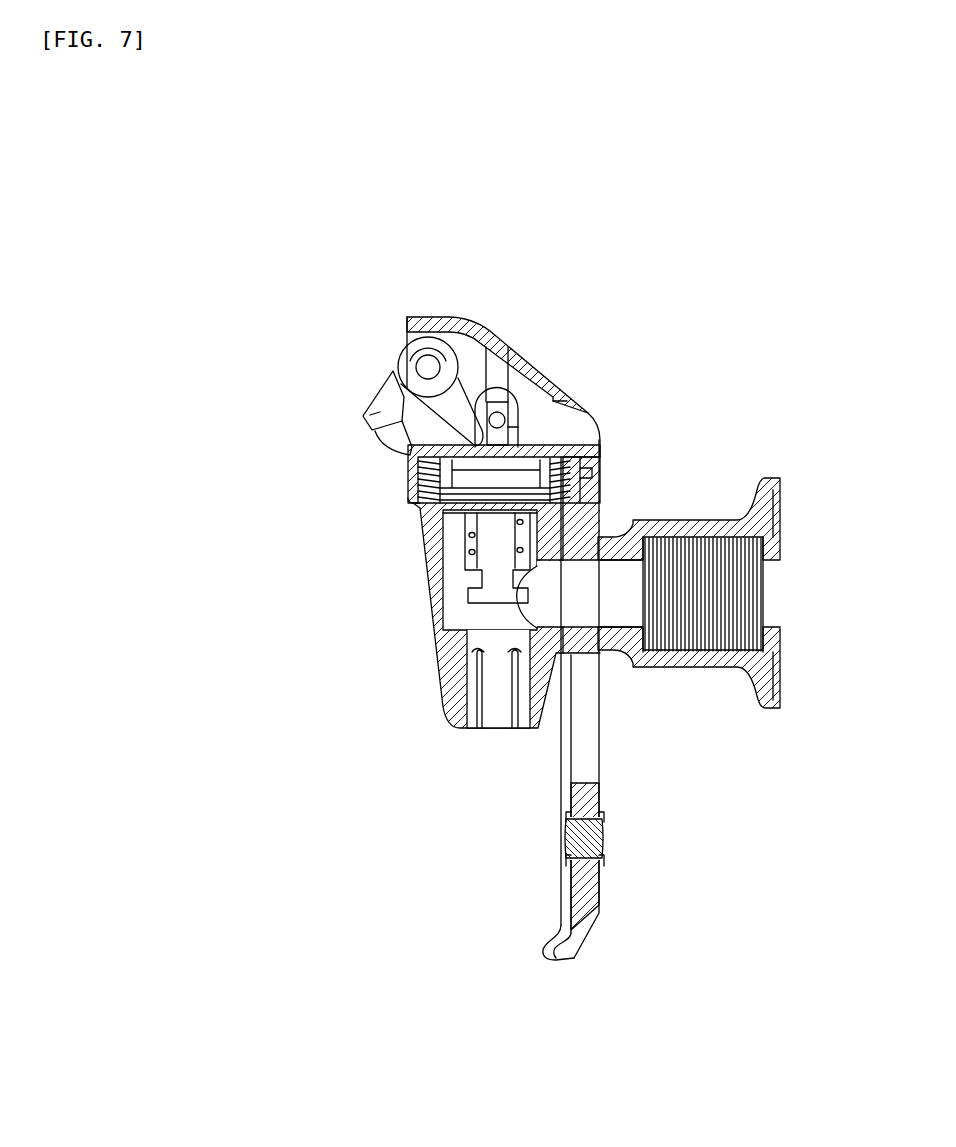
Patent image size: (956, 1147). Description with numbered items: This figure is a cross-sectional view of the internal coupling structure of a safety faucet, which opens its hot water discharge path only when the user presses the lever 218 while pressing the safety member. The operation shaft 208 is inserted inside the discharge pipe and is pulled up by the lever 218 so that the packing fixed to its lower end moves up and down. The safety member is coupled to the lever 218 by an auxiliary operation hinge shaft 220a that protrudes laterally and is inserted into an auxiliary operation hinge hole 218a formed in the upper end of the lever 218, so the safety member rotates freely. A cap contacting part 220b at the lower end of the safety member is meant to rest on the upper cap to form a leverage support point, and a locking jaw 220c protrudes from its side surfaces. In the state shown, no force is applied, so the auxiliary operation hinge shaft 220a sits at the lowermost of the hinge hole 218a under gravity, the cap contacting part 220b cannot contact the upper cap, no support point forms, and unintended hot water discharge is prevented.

The operation shaft 208 is at (490, 558).
The lever 218 is at (592, 753).
The auxiliary operation hinge hole 218a is at (428, 355).
The auxiliary operation hinge shaft 220a is at (447, 352).
The cap contacting part 220b is at (400, 457).
The locking jaw 220c is at (357, 422).